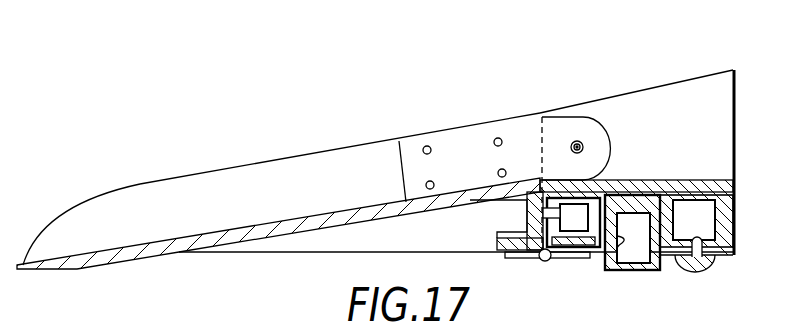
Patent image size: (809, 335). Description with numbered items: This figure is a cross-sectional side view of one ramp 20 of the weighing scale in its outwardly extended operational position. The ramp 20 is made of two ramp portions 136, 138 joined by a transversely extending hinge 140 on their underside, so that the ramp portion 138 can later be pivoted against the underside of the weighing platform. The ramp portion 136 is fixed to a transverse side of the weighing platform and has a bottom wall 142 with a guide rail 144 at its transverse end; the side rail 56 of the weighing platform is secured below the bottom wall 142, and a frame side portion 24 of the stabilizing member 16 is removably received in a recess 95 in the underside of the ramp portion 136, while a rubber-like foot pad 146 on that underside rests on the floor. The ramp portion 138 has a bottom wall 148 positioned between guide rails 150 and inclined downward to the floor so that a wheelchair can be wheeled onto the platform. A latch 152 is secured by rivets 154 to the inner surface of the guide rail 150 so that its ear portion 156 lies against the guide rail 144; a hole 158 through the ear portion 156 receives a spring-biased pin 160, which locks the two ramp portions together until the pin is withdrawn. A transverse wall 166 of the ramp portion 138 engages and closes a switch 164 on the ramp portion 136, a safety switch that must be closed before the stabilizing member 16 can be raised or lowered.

The ramp 20 is at (343, 131).
The stabilizing member 16 is at (633, 281).
The frame side portion 24 is at (617, 270).
The side rail 56 is at (708, 226).
The recess 95 is at (617, 248).
The ramp portion 136 is at (683, 90).
The ramp portion 138 is at (173, 189).
The hinge 140 is at (546, 261).
The bottom wall 142 is at (625, 180).
The guide rail 144 is at (710, 87).
The foot pad 146 is at (695, 272).
The bottom wall 148 is at (297, 220).
The guide rail 150 is at (123, 193).
The latch 152 is at (445, 140).
The rivet 154 is at (426, 184).
The ear portion 156 is at (600, 147).
The hole 158 is at (587, 140).
The spring-biased pin 160 is at (570, 143).
The switch 164 is at (566, 208).
The transverse wall 166 is at (495, 233).